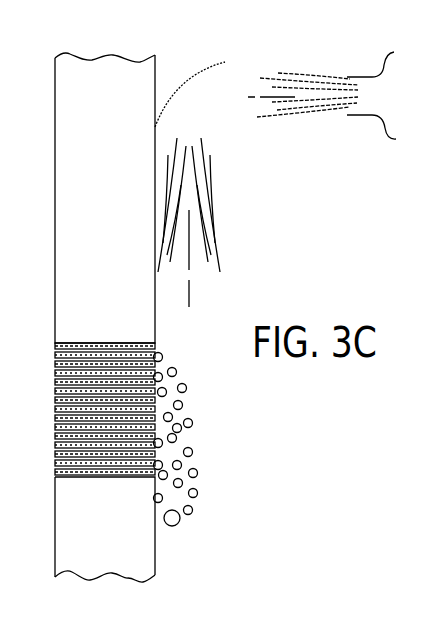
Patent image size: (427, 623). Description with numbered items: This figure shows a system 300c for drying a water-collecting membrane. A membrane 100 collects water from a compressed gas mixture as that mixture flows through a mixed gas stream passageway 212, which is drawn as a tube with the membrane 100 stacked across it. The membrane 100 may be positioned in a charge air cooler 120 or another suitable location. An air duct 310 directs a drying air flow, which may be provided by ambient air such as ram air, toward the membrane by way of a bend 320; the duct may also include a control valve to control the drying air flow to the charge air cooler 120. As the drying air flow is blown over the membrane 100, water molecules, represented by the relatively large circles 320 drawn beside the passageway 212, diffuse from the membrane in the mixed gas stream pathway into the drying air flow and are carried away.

The mixed gas stream passageway 212 is at (53, 115).
The membrane 100 is at (54, 397).
The air duct 310 is at (387, 52).
The charge air cooler 120 is at (266, 221).
The bend 320 is at (204, 71).
The system 300c is at (232, 476).